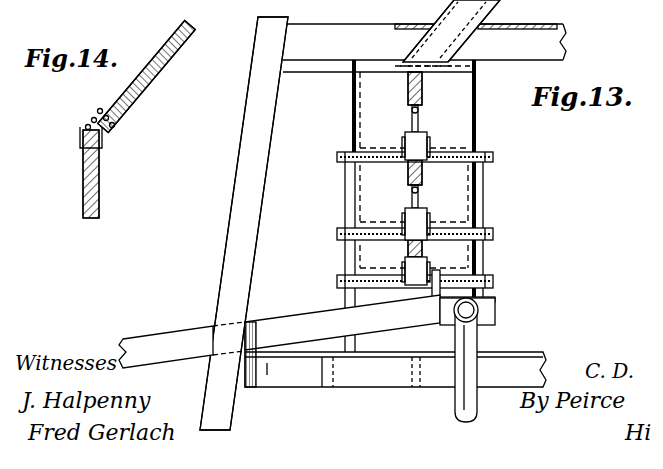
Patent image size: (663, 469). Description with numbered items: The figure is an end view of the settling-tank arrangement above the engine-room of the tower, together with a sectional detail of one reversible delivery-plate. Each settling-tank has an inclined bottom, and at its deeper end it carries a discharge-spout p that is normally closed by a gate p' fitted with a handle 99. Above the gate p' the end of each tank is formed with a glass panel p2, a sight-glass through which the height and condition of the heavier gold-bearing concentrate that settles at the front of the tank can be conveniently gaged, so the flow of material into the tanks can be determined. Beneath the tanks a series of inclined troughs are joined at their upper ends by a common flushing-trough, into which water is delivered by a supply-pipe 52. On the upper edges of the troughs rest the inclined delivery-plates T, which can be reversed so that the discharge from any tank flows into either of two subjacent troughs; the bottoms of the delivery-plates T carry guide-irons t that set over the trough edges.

In FIG. 14, the delivery-plates T is at (141, 76).
In FIG. 14, the guide-irons t is at (83, 151).
In FIG. 13, the glass panel p2 is at (408, 83).
In FIG. 13, the gate p' is at (398, 203).
In FIG. 13, the discharge-spout p is at (430, 201).
In FIG. 13, the handle 99 is at (418, 115).
In FIG. 13, the supply-pipe 52 is at (473, 342).